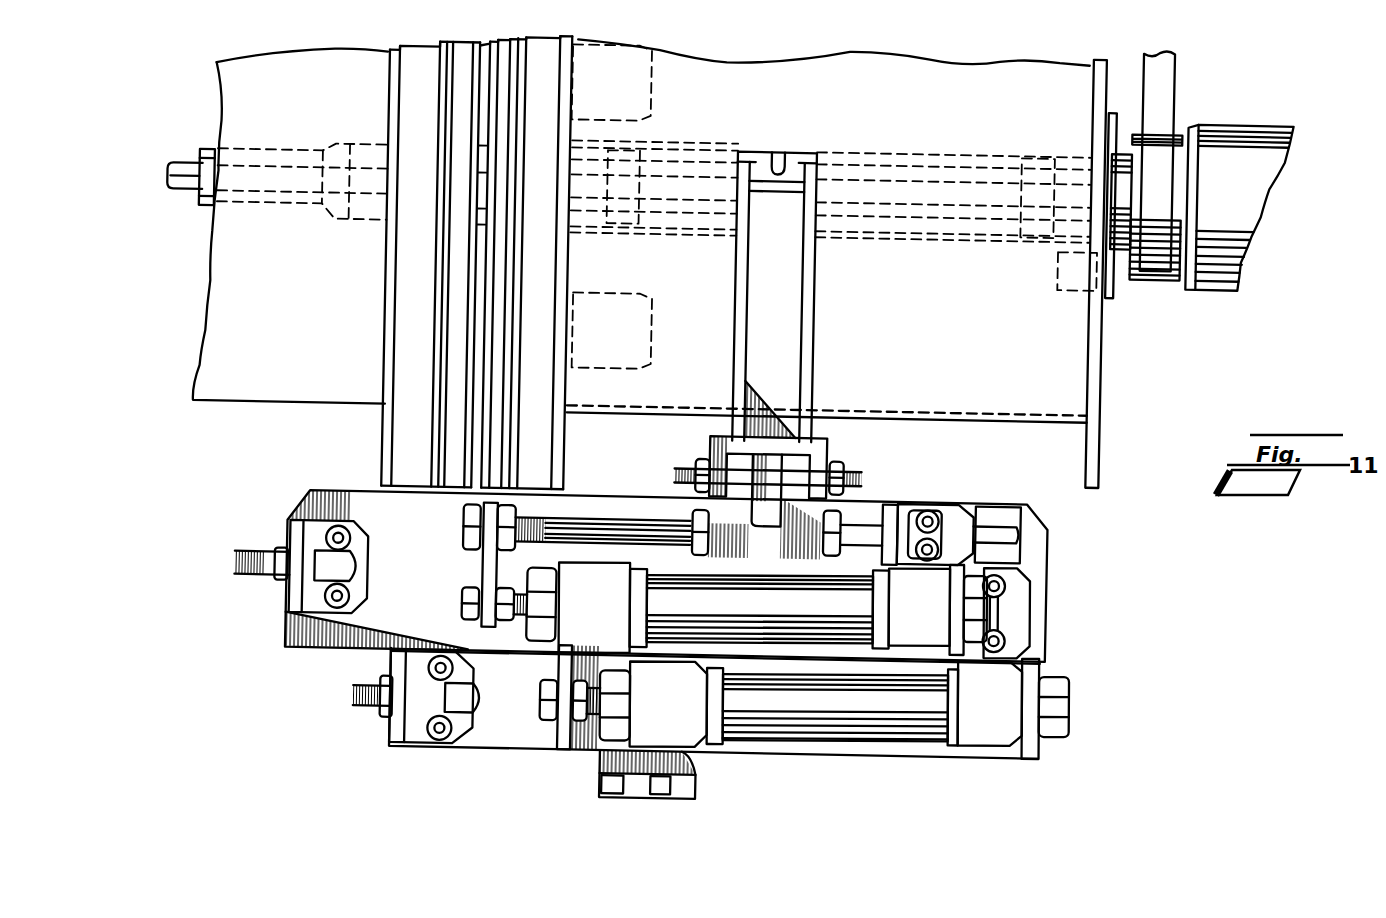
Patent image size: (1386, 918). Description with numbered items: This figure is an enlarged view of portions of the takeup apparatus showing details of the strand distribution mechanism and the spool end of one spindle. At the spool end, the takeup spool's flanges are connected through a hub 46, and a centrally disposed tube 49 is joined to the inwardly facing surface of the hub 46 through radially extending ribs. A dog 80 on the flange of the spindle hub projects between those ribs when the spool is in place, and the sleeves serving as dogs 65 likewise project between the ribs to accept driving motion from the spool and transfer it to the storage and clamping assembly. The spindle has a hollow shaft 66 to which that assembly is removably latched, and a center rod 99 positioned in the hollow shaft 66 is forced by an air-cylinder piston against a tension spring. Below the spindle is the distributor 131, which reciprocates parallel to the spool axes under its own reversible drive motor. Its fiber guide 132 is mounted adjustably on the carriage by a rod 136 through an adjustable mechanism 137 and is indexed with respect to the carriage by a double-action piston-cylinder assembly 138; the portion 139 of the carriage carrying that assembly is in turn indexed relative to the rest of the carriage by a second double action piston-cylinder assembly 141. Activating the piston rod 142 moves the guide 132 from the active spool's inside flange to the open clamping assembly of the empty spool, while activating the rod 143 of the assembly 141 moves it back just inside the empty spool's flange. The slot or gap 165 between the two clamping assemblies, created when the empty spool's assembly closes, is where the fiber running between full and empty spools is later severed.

The hub 46 is at (1016, 416).
The tube 49 is at (795, 258).
The dog 65 is at (647, 68).
The hollow shaft 66 is at (200, 175).
The dog 80 is at (1052, 278).
The center rod 99 is at (200, 210).
The distributor 131 is at (688, 626).
The fiber guide 132 is at (783, 150).
The rod 136 is at (602, 522).
The adjustable mechanism 137 is at (829, 440).
The double-action piston-cylinder assembly 138 is at (702, 595).
The portion of the carriage 139 is at (1049, 557).
The double action piston-cylinder assembly 141 is at (875, 739).
The piston rod 142 is at (523, 619).
The rod 143 is at (586, 747).
The slot or gap 165 is at (478, 432).